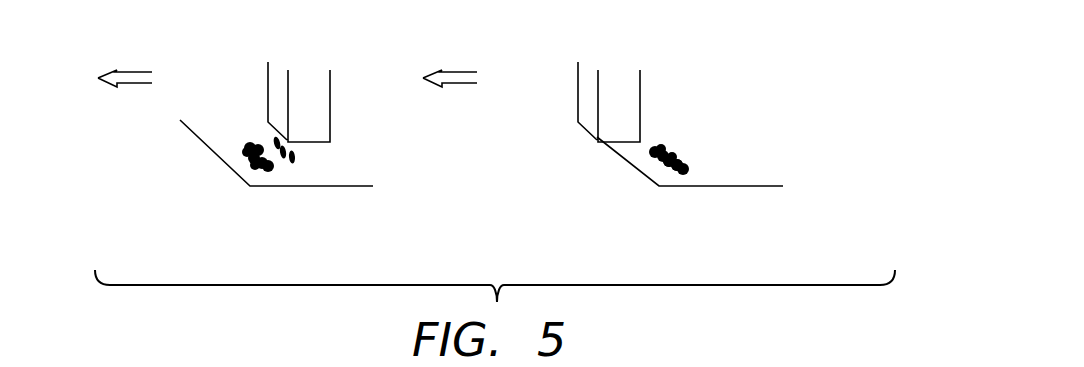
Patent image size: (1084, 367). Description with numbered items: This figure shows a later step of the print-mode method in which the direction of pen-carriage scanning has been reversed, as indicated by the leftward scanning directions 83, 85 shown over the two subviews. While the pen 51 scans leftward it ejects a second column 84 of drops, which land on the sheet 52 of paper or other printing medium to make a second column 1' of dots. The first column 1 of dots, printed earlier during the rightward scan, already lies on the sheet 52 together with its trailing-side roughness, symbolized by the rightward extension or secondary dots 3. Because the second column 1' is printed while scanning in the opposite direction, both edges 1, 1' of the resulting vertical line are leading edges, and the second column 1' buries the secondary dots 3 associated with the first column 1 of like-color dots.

The first column of dots 1 is at (422, 170).
The second column of dots 1' is at (710, 133).
The secondary dots 3 is at (278, 186).
The pen 51 is at (278, 75).
The sheet 52 is at (357, 179).
The leftward scanning direction 83 is at (128, 72).
The second column of drops 84 is at (300, 160).
The leftward scanning direction 85 is at (450, 72).